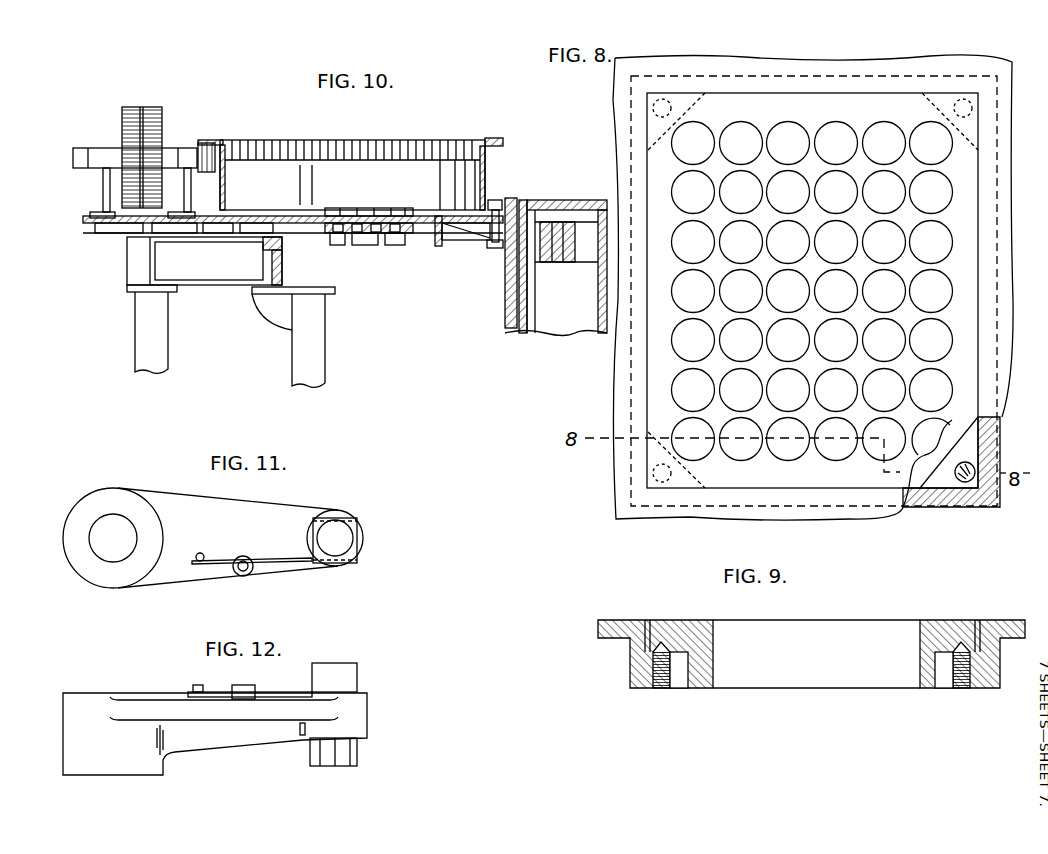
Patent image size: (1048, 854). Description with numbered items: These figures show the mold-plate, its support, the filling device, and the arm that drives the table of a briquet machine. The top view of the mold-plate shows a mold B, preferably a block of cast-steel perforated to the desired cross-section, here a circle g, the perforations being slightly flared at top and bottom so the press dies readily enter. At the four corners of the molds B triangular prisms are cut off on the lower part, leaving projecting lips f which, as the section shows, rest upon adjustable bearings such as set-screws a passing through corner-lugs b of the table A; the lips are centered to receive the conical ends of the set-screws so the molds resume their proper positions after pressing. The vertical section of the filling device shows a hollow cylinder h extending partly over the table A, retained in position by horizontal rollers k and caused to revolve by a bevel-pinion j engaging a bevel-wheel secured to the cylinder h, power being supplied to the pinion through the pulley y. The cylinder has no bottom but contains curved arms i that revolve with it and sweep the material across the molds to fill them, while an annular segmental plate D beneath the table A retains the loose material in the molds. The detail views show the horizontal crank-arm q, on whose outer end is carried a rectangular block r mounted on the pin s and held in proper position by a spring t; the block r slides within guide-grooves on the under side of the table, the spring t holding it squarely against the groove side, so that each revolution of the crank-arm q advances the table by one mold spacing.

In FIG. 10, the annular revoluble table A is at (318, 223).
In FIG. 8, the annular revoluble table A is at (637, 381).
In FIG. 9, the annular revoluble table A is at (626, 604).
In FIG. 10, the molds B is at (357, 233).
In FIG. 8, the molds B is at (868, 480).
In FIG. 9, the molds B is at (845, 683).
In FIG. 10, the annular segmental plate D is at (393, 240).
In FIG. 9, the set-screws a is at (657, 690).
In FIG. 8, the corner-lugs b is at (947, 484).
In FIG. 9, the corner-lugs b is at (680, 690).
In FIG. 8, the projecting lips f is at (948, 96).
In FIG. 9, the projecting lips f is at (655, 624).
In FIG. 8, the circle g is at (812, 291).
In FIG. 10, the hollow cylinder h is at (470, 179).
In FIG. 10, the curved arms i is at (305, 208).
In FIG. 10, the bevel-pinion j is at (206, 173).
In FIG. 10, the horizontal rollers k is at (508, 202).
In FIG. 10, the pulley y is at (150, 123).
In FIG. 11, the crank-arm q is at (200, 538).
In FIG. 12, the crank-arm q is at (250, 712).
In FIG. 11, the rectangular block r is at (352, 554).
In FIG. 12, the rectangular block r is at (345, 680).
In FIG. 11, the pin s is at (337, 540).
In FIG. 11, the spring t is at (282, 564).
In FIG. 12, the spring t is at (265, 693).